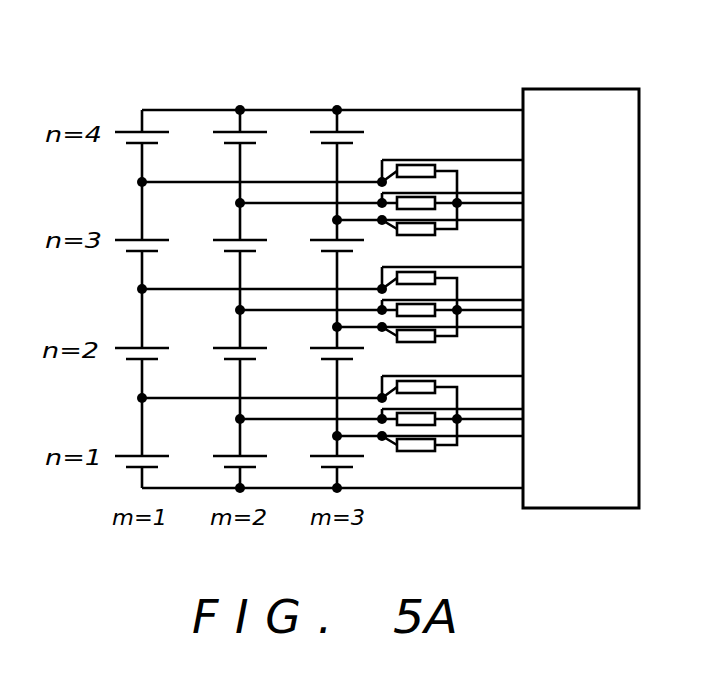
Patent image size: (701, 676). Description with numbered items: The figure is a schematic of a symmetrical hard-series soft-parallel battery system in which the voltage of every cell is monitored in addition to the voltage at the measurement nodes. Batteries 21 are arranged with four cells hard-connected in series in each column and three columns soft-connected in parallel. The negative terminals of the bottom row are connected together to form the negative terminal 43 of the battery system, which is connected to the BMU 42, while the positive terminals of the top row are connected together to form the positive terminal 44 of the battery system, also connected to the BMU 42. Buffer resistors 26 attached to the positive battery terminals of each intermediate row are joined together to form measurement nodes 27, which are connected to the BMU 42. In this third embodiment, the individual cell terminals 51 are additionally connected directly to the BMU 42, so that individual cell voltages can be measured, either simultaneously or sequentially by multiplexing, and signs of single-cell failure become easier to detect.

The battery 21 is at (256, 131).
The positive bus line 44 is at (394, 110).
The negative terminal 43 is at (180, 489).
The terminal 51 is at (382, 438).
The buffer resistor 26 is at (420, 452).
The measurement node 27 is at (459, 422).
The BMU 42 is at (593, 509).